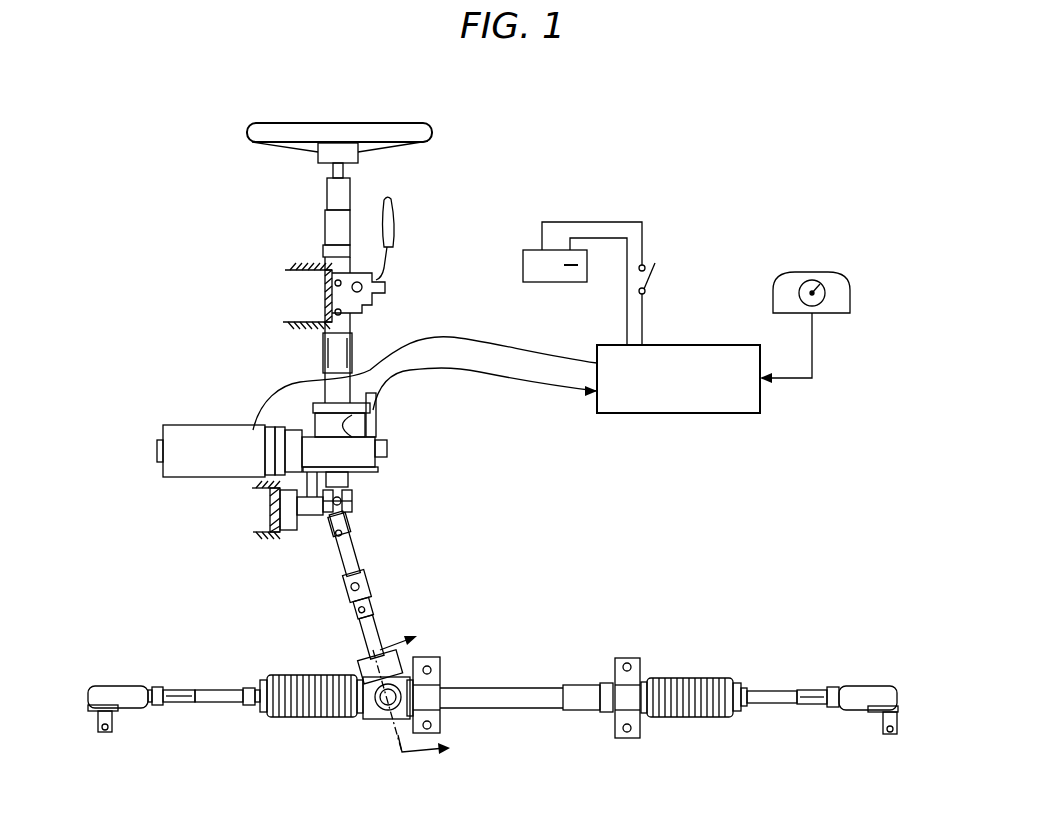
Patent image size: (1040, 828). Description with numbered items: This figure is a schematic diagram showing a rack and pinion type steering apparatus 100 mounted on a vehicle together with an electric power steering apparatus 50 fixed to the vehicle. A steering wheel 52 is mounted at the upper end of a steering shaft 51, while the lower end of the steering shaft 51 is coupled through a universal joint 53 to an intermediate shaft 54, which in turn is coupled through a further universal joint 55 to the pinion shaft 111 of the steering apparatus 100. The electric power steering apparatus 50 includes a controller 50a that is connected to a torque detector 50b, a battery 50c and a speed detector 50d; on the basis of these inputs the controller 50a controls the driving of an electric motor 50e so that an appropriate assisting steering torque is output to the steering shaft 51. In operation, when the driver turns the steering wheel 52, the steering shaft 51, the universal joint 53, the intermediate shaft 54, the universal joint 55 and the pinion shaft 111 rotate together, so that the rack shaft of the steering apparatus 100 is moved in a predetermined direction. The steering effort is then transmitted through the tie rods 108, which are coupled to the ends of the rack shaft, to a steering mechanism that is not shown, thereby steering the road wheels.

The electric power steering apparatus 50 is at (404, 438).
The controller 50a is at (678, 414).
The torque detector 50b is at (377, 409).
The battery 50c is at (553, 283).
The speed detector 50d is at (840, 296).
The electric motor 50e is at (207, 463).
The steering shaft 51 is at (347, 167).
The steering wheel 52 is at (432, 133).
The universal joint 53 is at (353, 497).
The intermediate shaft 54 is at (358, 553).
The universal joint 55 is at (375, 590).
The steering apparatus 100 is at (523, 669).
The tie rods 108 is at (212, 690).
The pinion shaft 111 is at (388, 637).